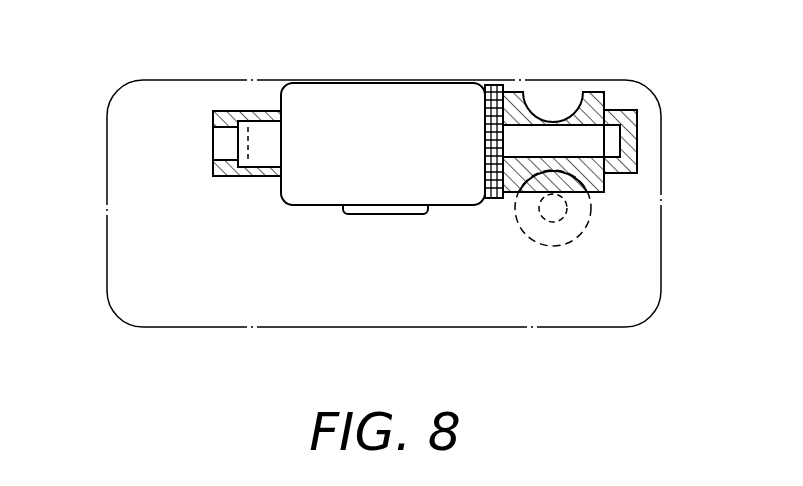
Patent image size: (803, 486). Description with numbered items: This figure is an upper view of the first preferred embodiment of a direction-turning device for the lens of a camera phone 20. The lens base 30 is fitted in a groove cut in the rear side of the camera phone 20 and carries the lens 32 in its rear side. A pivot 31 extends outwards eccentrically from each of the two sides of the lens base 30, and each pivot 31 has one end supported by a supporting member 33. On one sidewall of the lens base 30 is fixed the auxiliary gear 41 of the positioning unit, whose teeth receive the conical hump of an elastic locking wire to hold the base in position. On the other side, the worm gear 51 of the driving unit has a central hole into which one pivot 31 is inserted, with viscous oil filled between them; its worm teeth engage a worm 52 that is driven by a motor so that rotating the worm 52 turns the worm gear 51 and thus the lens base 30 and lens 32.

The camera phone 20 is at (650, 228).
The lens base 30 is at (388, 118).
The pivot 31 is at (602, 140).
The lens 32 is at (378, 214).
The supporting member 33 is at (633, 107).
The auxiliary gear 41 is at (495, 103).
The worm gear 51 is at (578, 118).
The worm 52 is at (572, 228).